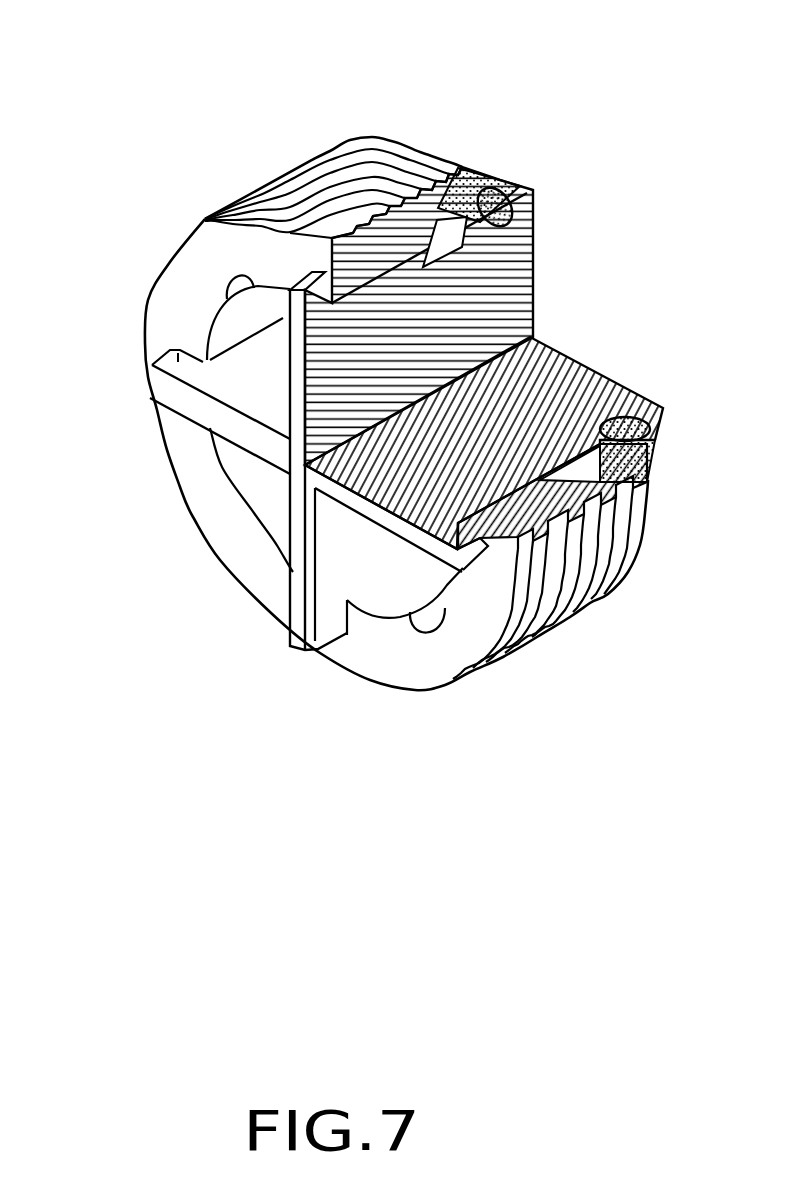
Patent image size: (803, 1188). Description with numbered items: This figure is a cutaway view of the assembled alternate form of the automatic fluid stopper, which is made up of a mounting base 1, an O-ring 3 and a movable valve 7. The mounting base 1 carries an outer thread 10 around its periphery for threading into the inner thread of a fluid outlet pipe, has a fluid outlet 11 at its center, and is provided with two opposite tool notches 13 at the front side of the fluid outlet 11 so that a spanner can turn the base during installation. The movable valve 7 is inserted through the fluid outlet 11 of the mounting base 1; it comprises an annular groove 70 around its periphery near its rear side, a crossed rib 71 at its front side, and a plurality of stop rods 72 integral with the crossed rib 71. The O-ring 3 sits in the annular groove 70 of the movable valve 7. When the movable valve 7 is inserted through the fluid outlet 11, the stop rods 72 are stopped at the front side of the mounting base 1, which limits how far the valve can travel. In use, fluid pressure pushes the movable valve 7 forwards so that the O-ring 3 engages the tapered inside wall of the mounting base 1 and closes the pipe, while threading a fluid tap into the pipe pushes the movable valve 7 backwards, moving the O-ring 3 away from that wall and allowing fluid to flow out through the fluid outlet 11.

The mounting base 1 is at (173, 298).
The O-ring 3 is at (477, 175).
The movable valve 7 is at (587, 385).
The outer thread 10 is at (372, 178).
The fluid outlet 11 is at (402, 590).
The tool notches 13 is at (235, 280).
The annular groove 70 is at (533, 245).
The crossed rib 71 is at (340, 540).
The stop rods 72 is at (178, 362).